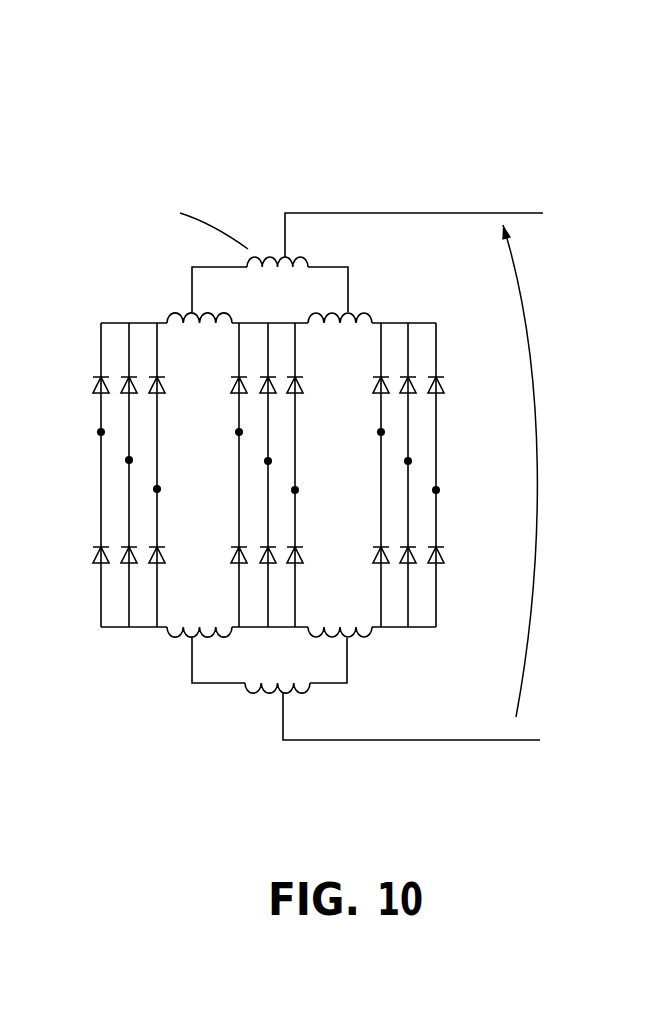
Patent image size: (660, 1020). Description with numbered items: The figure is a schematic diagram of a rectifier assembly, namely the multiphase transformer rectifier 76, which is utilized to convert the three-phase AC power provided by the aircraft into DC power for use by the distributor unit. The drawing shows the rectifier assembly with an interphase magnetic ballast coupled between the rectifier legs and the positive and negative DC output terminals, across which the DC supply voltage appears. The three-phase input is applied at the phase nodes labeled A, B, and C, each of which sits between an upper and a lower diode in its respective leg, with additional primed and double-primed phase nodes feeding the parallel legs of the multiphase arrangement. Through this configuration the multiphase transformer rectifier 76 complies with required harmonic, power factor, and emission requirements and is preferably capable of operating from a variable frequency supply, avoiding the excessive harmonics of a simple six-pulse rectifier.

The multiphase transformer rectifier 76 is at (515, 165).
The phase A rectifier leg A is at (232, 475).
The phase B rectifier leg B is at (262, 475).
The phase C rectifier leg C is at (292, 475).